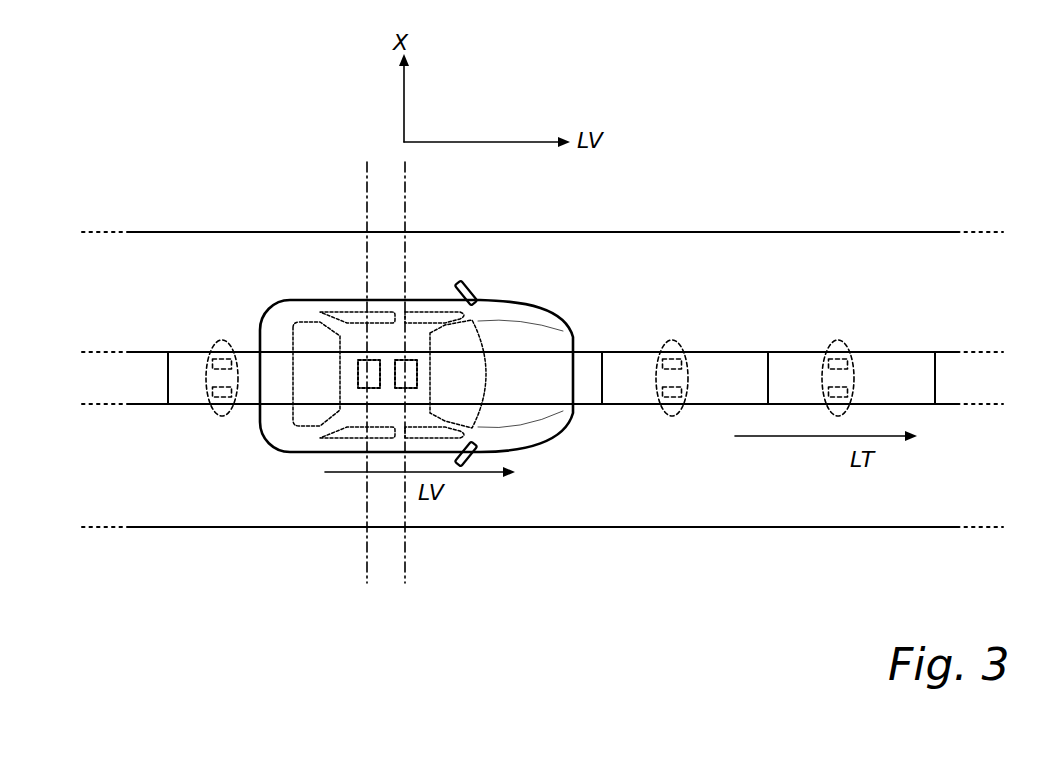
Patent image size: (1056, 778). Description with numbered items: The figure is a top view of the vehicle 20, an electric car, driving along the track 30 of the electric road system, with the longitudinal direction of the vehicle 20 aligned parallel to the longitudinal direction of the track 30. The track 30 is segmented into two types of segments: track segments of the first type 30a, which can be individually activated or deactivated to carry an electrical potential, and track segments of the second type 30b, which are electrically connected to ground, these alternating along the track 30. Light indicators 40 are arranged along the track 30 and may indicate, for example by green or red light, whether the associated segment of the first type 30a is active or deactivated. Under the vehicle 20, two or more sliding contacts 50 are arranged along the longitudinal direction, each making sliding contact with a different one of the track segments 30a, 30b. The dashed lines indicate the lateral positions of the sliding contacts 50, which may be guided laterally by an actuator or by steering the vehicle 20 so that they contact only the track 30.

The vehicle 20 is at (543, 443).
The track 30 is at (968, 347).
The track segment of the first type 30a is at (717, 352).
The track segment of the second type 30b is at (885, 352).
The light indicator 40 is at (223, 416).
The sliding contact 50 is at (358, 373).